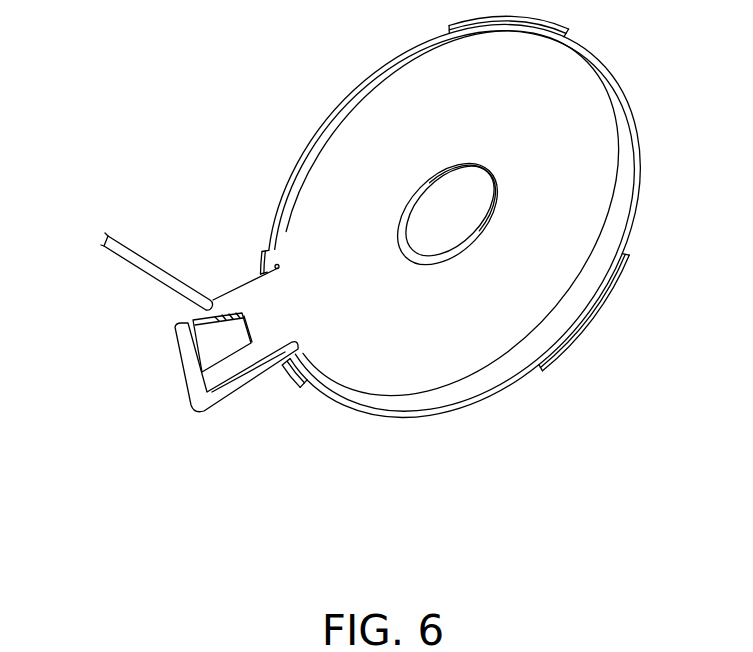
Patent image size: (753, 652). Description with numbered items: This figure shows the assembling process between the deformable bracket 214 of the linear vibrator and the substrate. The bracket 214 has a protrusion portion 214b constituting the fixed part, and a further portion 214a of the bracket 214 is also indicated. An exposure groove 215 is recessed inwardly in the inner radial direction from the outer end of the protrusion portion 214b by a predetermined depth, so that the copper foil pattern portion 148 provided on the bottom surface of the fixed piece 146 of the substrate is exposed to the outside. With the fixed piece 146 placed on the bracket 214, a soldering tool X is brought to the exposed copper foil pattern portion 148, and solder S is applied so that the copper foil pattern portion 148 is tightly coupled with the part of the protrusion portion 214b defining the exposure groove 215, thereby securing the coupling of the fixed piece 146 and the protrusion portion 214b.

The soldering tool X is at (146, 265).
The solder S is at (221, 317).
The copper foil pattern portion 148 is at (222, 338).
The fixed piece 146 is at (187, 362).
The exposure groove 215 is at (247, 320).
The deformable bracket 214 is at (426, 289).
The disc face 214a is at (350, 337).
The protrusion portion 214b is at (268, 330).